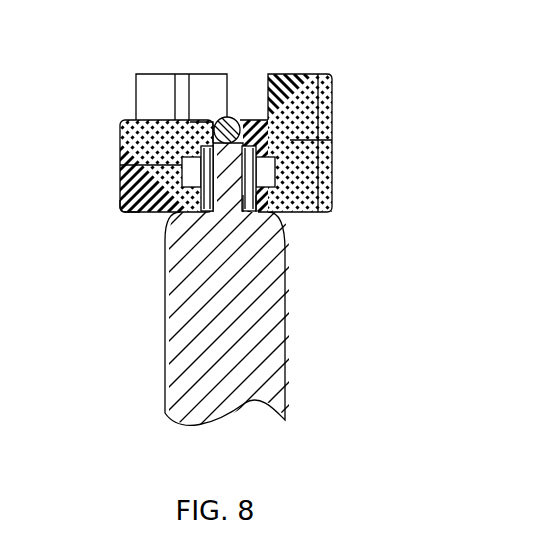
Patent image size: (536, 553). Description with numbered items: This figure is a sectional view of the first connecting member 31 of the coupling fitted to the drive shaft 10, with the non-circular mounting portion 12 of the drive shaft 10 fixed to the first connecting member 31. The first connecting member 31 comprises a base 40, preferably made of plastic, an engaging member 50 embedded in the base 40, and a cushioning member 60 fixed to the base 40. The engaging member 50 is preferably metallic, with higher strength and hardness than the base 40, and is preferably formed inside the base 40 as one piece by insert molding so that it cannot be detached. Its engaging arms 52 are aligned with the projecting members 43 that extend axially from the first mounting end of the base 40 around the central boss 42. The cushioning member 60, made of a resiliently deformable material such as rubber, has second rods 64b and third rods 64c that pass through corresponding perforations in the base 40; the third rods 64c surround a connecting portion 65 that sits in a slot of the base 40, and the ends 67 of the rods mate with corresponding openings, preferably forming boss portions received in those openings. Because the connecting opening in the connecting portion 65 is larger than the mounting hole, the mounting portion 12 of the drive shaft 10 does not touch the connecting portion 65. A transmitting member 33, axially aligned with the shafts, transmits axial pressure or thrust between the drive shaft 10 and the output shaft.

The drive shaft 10 is at (243, 327).
The mounting portion 12 is at (222, 205).
The first connecting member 31 is at (120, 193).
The transmitting member 33 is at (190, 122).
The base 40 is at (120, 135).
The boss 42 is at (252, 118).
The projecting members 43 is at (325, 76).
The engaging member 50 is at (267, 212).
The engaging arms 52 is at (333, 177).
The cushioning member 60 is at (205, 83).
The second rods 64b is at (332, 141).
The third rods 64c is at (120, 165).
The connecting portion 65 is at (167, 230).
The ends 67 is at (313, 215).